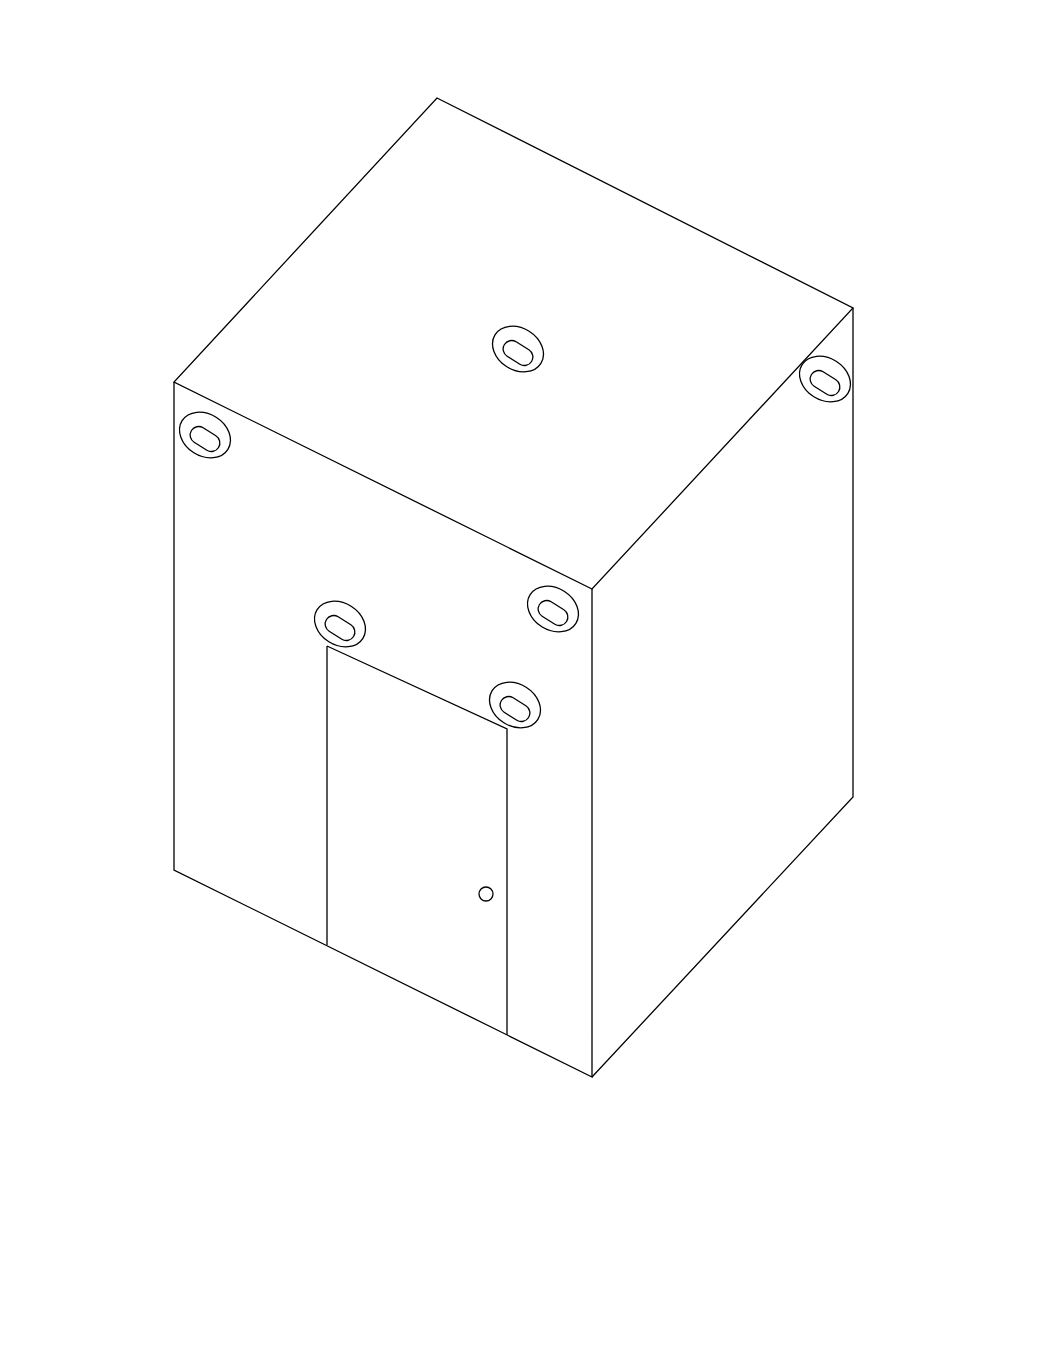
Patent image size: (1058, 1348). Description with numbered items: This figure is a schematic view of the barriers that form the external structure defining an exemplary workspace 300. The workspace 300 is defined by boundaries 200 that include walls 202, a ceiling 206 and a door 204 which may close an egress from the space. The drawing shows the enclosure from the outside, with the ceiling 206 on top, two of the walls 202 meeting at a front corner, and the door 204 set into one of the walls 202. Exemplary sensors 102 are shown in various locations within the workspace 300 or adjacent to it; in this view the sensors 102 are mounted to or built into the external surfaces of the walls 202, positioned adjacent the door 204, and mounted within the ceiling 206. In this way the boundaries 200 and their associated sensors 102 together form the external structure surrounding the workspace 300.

The workspace 300 is at (723, 120).
The boundaries 200 is at (816, 721).
The walls 202 is at (198, 760).
The door 204 is at (469, 833).
The ceiling 206 is at (733, 318).
The sensors 102 is at (497, 333).